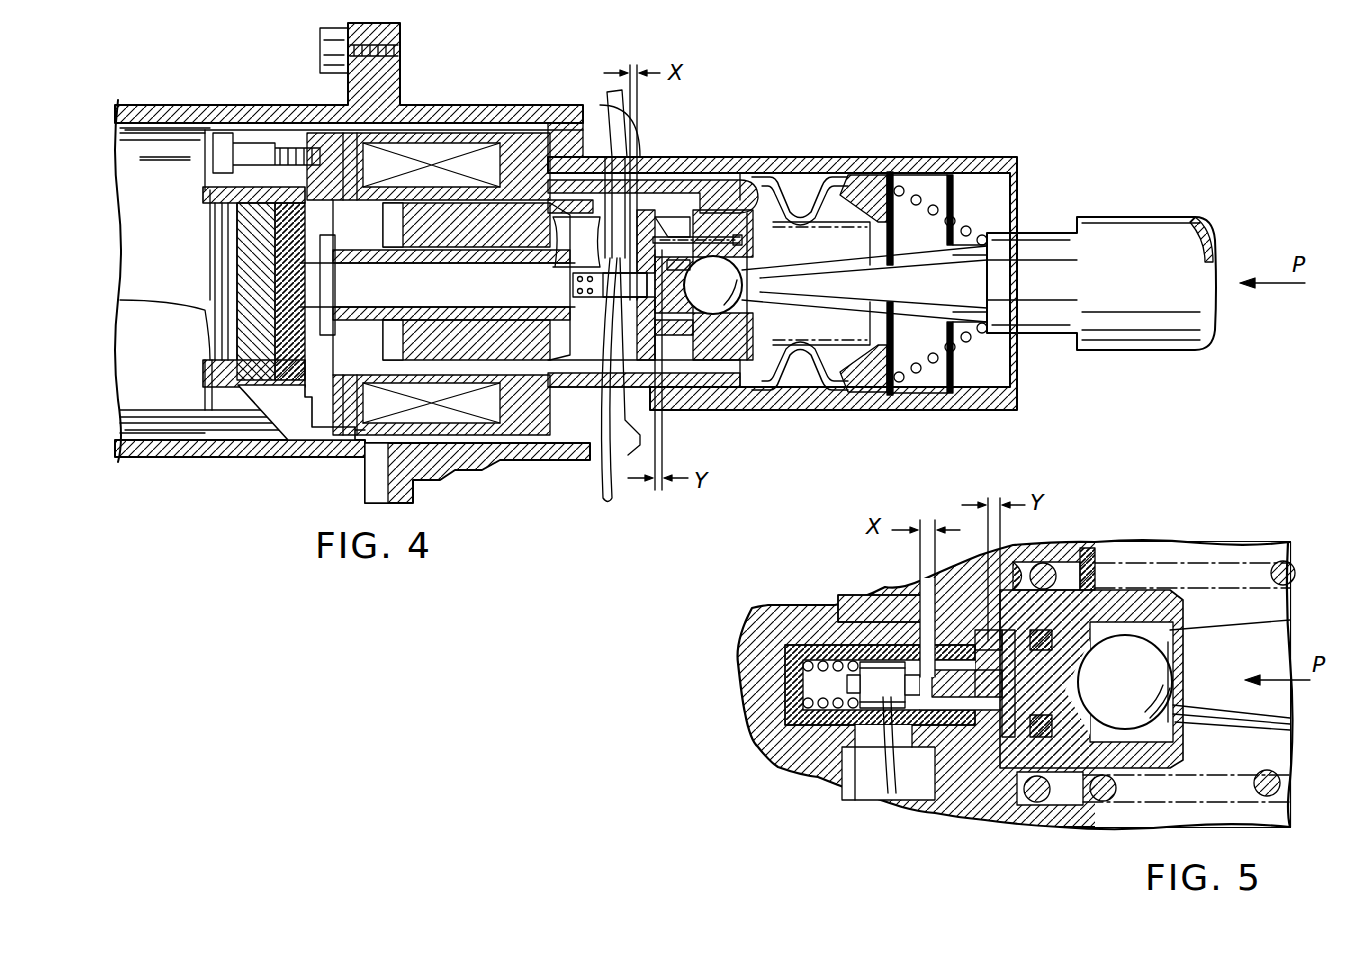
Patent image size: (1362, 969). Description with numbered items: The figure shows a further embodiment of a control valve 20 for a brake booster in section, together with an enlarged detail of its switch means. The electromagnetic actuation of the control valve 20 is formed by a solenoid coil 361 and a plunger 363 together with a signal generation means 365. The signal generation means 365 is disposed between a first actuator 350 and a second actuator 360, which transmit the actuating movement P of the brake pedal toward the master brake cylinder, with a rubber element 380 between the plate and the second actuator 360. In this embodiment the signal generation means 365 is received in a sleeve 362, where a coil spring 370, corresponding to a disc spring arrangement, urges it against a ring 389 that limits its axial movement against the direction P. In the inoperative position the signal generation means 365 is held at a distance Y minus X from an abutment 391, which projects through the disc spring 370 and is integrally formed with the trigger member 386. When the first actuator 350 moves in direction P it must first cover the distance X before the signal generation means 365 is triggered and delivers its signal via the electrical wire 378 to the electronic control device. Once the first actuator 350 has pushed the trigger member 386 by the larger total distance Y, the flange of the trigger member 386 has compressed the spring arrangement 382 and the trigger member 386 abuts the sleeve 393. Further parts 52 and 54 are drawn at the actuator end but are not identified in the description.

In FIG. 4, the control valve 20 is at (805, 80).
In FIG. 4, the piston 52 is at (882, 405).
In FIG. 4, the spring balls 54 is at (952, 185).
In FIG. 4, the first actuator 350 is at (1152, 228).
In FIG. 5, the first actuator 350 is at (1246, 662).
In FIG. 4, the second actuator 360 is at (155, 268).
In FIG. 4, the solenoid coil 361 is at (470, 140).
In FIG. 5, the sleeve 362 is at (790, 712).
In FIG. 4, the plunger 363 is at (472, 330).
In FIG. 4, the signal generation means 365 is at (628, 275).
In FIG. 5, the signal generation means 365 is at (875, 670).
In FIG. 5, the coil spring 370 is at (790, 768).
In FIG. 4, the electrical wire 378 is at (605, 486).
In FIG. 5, the electrical wire 378 is at (870, 768).
In FIG. 4, the rubber element 380 is at (282, 393).
In FIG. 5, the spring arrangement 382 is at (1062, 595).
In FIG. 4, the trigger member 386 is at (690, 250).
In FIG. 5, the trigger member 386 is at (1125, 600).
In FIG. 5, the ring 389 is at (955, 730).
In FIG. 4, the abutment 391 is at (675, 365).
In FIG. 5, the abutment 391 is at (968, 688).
In FIG. 5, the sleeve 393 is at (920, 620).